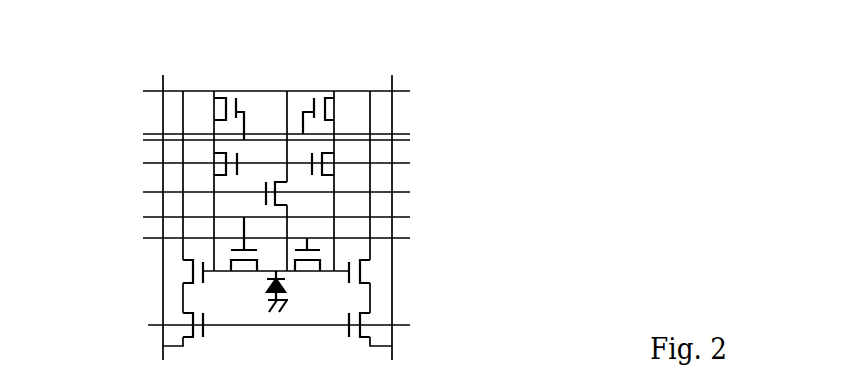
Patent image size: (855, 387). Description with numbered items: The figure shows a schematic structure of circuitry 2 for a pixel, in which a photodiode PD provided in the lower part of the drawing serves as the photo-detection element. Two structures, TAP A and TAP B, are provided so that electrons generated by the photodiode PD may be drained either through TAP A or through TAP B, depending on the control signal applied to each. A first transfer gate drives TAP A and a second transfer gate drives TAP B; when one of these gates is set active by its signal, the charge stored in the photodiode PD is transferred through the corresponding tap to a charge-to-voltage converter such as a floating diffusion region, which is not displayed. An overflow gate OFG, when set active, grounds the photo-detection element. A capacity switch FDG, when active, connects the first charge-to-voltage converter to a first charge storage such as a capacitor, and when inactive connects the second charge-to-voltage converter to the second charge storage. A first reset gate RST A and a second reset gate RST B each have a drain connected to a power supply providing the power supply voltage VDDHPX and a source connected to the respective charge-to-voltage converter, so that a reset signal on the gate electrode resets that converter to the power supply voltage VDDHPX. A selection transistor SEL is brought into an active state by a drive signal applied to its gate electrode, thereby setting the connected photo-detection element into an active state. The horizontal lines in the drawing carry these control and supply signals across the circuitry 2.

The circuitry 2 is at (265, 74).
The structure TAP A is at (213, 257).
The structure TAP B is at (339, 253).
The photodiode PD is at (261, 285).
The power supply voltage VDDHPX is at (302, 93).
The first reset gate RST A is at (295, 126).
The second reset gate RST B is at (295, 139).
The capacity switch FDG is at (289, 162).
The overflow gate OFG is at (290, 191).
The selection transistor SEL is at (292, 327).